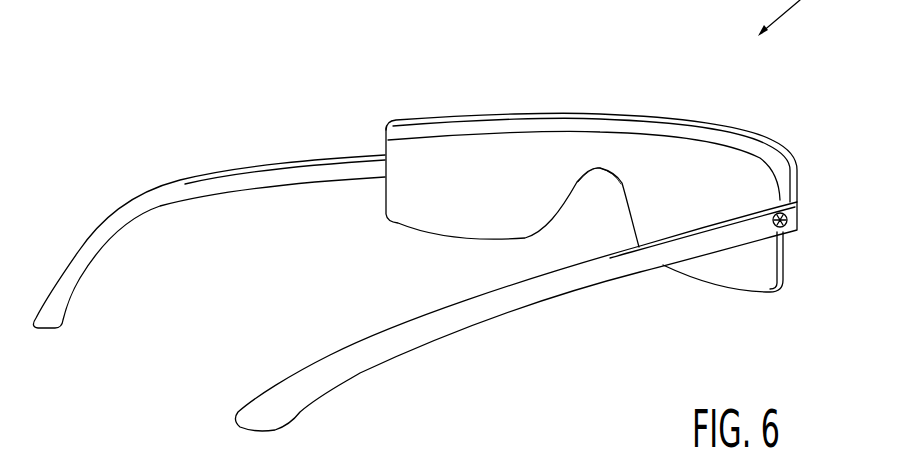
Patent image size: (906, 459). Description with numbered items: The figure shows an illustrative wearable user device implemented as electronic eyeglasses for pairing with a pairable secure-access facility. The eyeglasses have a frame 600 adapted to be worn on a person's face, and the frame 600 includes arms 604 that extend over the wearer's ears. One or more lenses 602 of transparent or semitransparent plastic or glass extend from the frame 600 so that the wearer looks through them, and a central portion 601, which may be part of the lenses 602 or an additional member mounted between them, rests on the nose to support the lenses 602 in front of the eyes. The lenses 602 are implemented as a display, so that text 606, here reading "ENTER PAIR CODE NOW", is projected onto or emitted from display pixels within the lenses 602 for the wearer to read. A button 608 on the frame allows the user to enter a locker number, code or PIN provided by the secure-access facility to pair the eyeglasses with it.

The frame 600 is at (598, 118).
The central portion 601 is at (597, 195).
The lenses 602 is at (718, 286).
The arms 604 is at (155, 212).
The text 606 is at (444, 211).
The button 608 is at (798, 221).